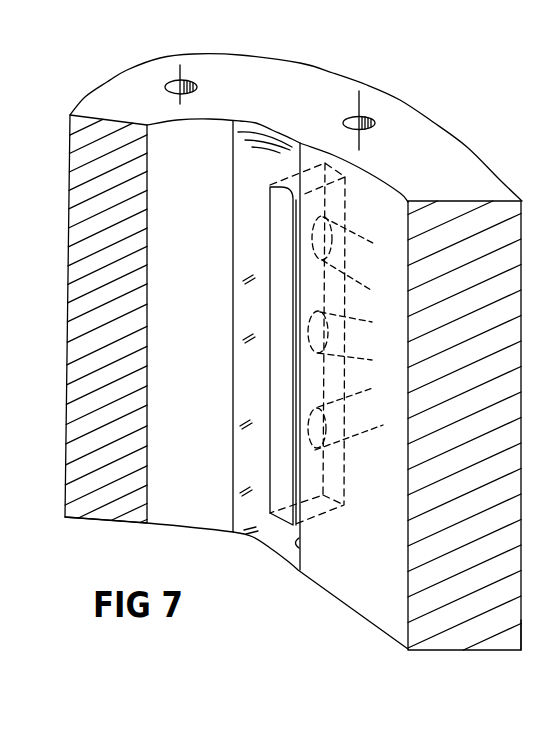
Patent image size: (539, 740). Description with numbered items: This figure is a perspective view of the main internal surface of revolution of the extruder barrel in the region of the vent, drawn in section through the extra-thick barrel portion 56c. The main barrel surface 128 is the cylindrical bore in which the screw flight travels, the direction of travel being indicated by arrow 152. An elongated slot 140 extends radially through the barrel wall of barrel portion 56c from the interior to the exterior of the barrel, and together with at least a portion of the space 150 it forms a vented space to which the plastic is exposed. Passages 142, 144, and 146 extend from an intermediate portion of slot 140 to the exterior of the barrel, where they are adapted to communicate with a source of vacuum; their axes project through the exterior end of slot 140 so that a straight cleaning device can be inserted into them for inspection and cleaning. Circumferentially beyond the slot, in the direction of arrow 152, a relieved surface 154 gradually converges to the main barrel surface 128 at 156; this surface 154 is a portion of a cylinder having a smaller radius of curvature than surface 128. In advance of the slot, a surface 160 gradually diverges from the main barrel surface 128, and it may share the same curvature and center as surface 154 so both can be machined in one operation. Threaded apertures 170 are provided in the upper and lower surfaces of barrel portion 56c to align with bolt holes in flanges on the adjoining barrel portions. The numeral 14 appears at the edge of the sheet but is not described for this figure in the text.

The housing 14 is at (530, 635).
The barrel portion 56c is at (460, 638).
The main barrel surface 128 is at (170, 510).
The slot 140 is at (275, 204).
The passage 142 is at (352, 262).
The passage 144 is at (360, 345).
The passage 146 is at (357, 417).
The space 150 is at (277, 178).
The direction of travel arrow 152 is at (162, 183).
The surface 154 is at (233, 517).
The convergence location 156 is at (232, 373).
The surface 160 is at (297, 549).
The threaded apertures 170 is at (187, 82).